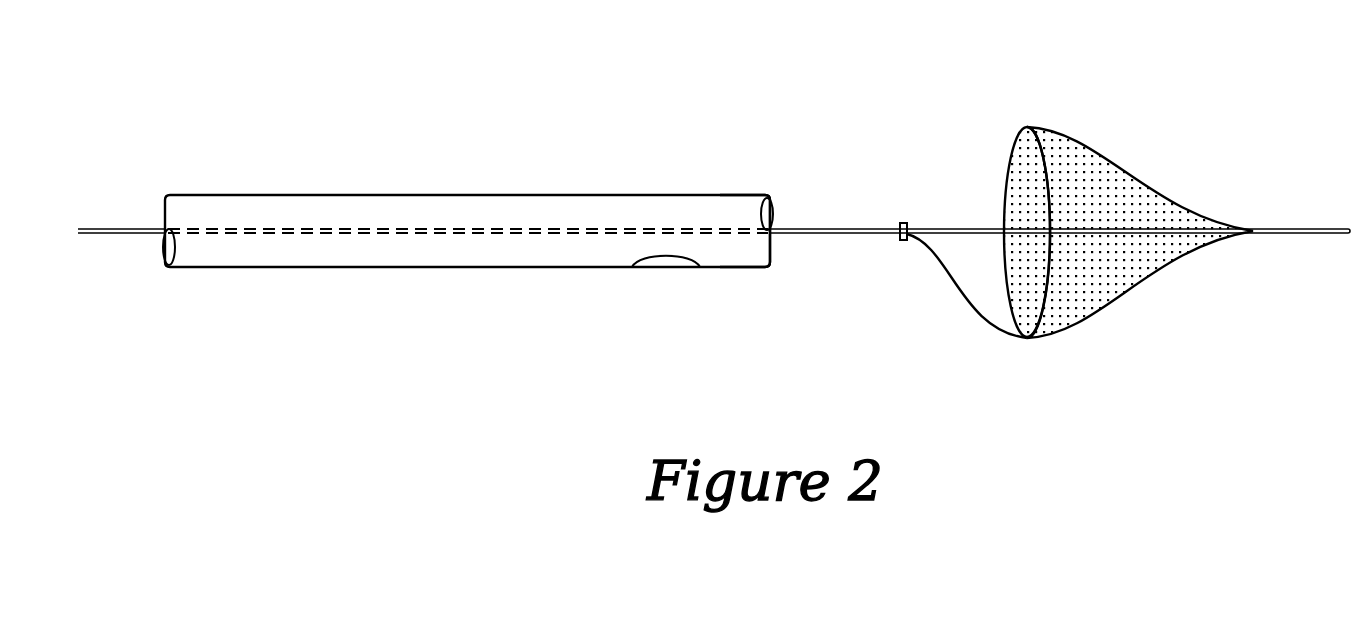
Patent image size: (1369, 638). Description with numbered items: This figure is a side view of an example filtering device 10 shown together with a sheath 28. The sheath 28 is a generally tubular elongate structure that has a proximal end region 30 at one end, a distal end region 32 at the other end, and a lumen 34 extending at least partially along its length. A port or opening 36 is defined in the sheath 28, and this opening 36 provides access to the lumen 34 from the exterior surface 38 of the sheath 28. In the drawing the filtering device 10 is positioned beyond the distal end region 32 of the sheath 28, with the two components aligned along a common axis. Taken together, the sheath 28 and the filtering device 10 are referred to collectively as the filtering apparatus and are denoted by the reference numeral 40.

The filtering device 10 is at (921, 193).
The sheath 28 is at (383, 190).
The proximal end region 30 is at (188, 204).
The distal end region 32 is at (748, 205).
The lumen 34 is at (770, 210).
The port or opening 36 is at (668, 262).
The exterior surface 38 is at (540, 253).
The filtering apparatus 40 is at (495, 117).